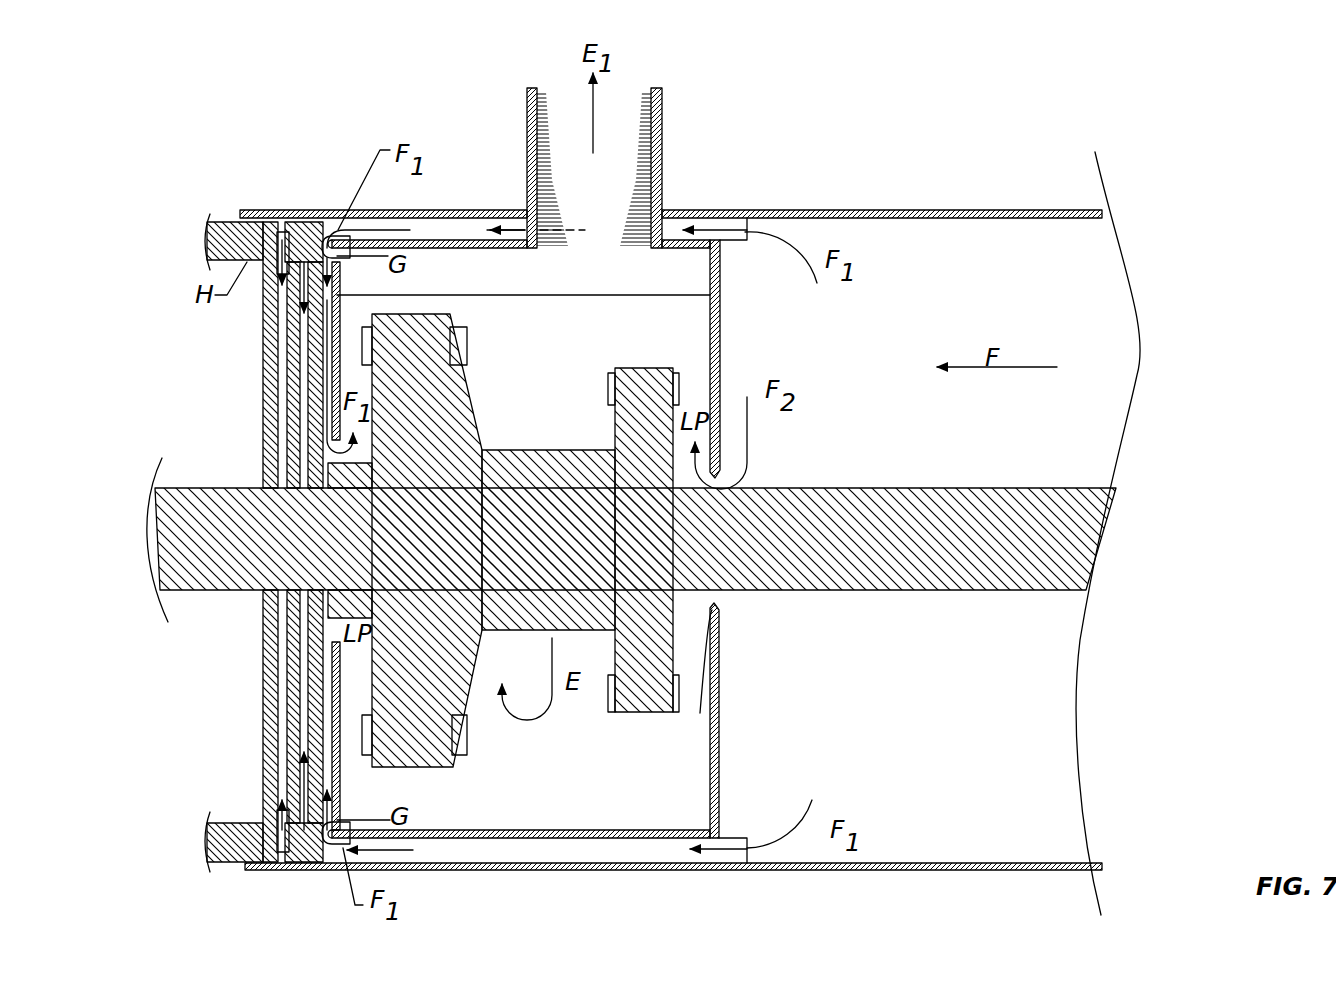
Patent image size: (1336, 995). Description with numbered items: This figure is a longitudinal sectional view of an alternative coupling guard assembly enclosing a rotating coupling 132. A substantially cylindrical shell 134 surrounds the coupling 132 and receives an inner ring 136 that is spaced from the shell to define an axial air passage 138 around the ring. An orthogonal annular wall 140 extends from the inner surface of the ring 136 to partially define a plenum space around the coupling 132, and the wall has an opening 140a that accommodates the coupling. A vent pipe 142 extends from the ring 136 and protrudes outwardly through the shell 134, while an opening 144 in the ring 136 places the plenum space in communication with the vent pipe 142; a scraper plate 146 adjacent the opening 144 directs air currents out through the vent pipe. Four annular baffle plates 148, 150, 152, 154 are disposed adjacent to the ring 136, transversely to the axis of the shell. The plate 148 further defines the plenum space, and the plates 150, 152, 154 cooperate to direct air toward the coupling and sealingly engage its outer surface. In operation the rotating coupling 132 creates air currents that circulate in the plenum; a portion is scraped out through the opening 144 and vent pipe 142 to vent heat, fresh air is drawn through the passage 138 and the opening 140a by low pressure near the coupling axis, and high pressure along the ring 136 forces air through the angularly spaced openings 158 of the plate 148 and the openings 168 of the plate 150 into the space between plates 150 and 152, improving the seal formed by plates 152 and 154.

The coupling 132 is at (930, 478).
The shell 134 is at (683, 208).
The inner ring 136 is at (425, 249).
The axial air passage 138 is at (420, 228).
The orthogonal annular wall 140 is at (722, 312).
The opening 140a is at (700, 718).
The vent pipe 142 is at (663, 144).
The opening 144 is at (662, 250).
The scraper plate 146 is at (612, 280).
The annular baffle plate 148 is at (340, 757).
The annular baffle plate 150 is at (318, 685).
The annular baffle plate 152 is at (287, 370).
The annular baffle plate 154 is at (263, 430).
The angularly spaced openings 158 is at (350, 257).
The angularly spaced openings 168 is at (283, 232).